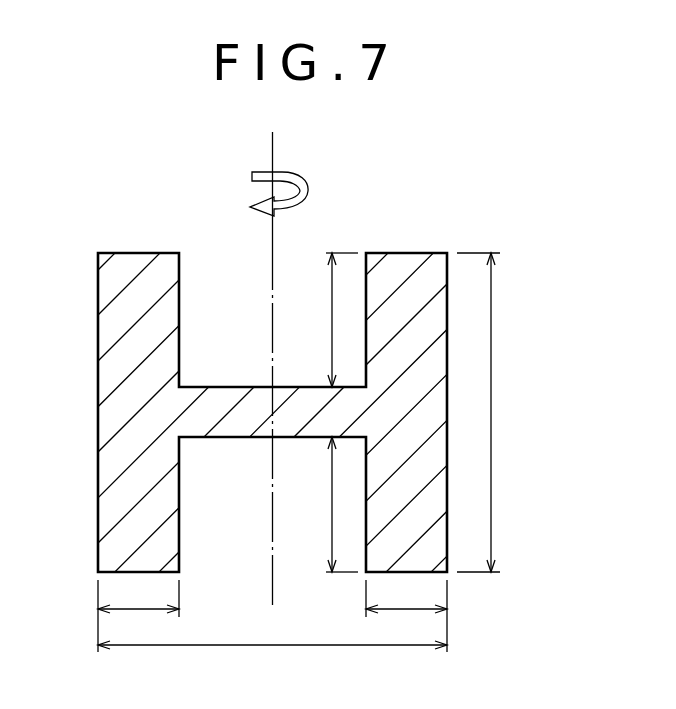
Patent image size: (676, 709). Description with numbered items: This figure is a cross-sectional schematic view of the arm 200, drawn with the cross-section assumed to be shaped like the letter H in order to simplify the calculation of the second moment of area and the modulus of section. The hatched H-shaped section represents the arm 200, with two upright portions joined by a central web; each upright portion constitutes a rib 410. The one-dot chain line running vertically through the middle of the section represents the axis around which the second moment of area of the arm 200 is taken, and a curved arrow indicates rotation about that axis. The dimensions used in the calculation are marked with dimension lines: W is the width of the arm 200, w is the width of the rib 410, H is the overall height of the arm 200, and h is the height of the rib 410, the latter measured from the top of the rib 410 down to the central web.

The arm 200 is at (343, 167).
The rib 410 is at (408, 243).
The height of the rib h is at (334, 412).
The overall height of the arm H is at (489, 412).
The width of the rib w is at (272, 598).
The width of the arm W is at (272, 616).